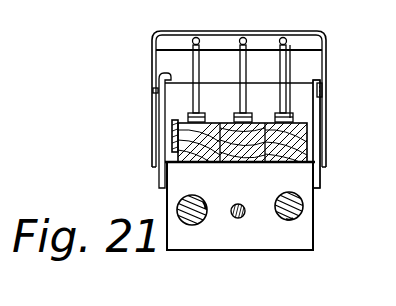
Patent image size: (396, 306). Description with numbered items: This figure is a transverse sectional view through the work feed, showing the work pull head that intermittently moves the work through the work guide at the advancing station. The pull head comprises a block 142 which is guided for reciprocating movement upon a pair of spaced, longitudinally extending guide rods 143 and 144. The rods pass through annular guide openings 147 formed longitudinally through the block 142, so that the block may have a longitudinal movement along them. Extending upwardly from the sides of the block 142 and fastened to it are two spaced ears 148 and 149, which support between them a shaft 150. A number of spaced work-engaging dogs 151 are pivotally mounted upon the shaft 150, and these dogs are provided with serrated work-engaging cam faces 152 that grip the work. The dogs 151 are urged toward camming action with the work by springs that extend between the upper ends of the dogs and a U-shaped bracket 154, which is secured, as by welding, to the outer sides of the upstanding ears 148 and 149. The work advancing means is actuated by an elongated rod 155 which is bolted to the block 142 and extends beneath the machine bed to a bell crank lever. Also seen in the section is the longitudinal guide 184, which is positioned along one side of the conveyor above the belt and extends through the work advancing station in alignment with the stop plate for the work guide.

The U-shaped bracket 154 is at (169, 31).
The work-engaging dogs 151 is at (237, 55).
The shaft 150 is at (297, 89).
The ear 149 is at (318, 83).
The ear 148 is at (158, 77).
The serrated work-engaging cam faces 152 is at (178, 124).
The longitudinal guide 184 is at (173, 143).
The guide rod 143 is at (178, 207).
The annular guide openings 147 is at (204, 205).
The elongated rod 155 is at (238, 219).
The guide rod 144 is at (309, 202).
The block 142 is at (312, 218).